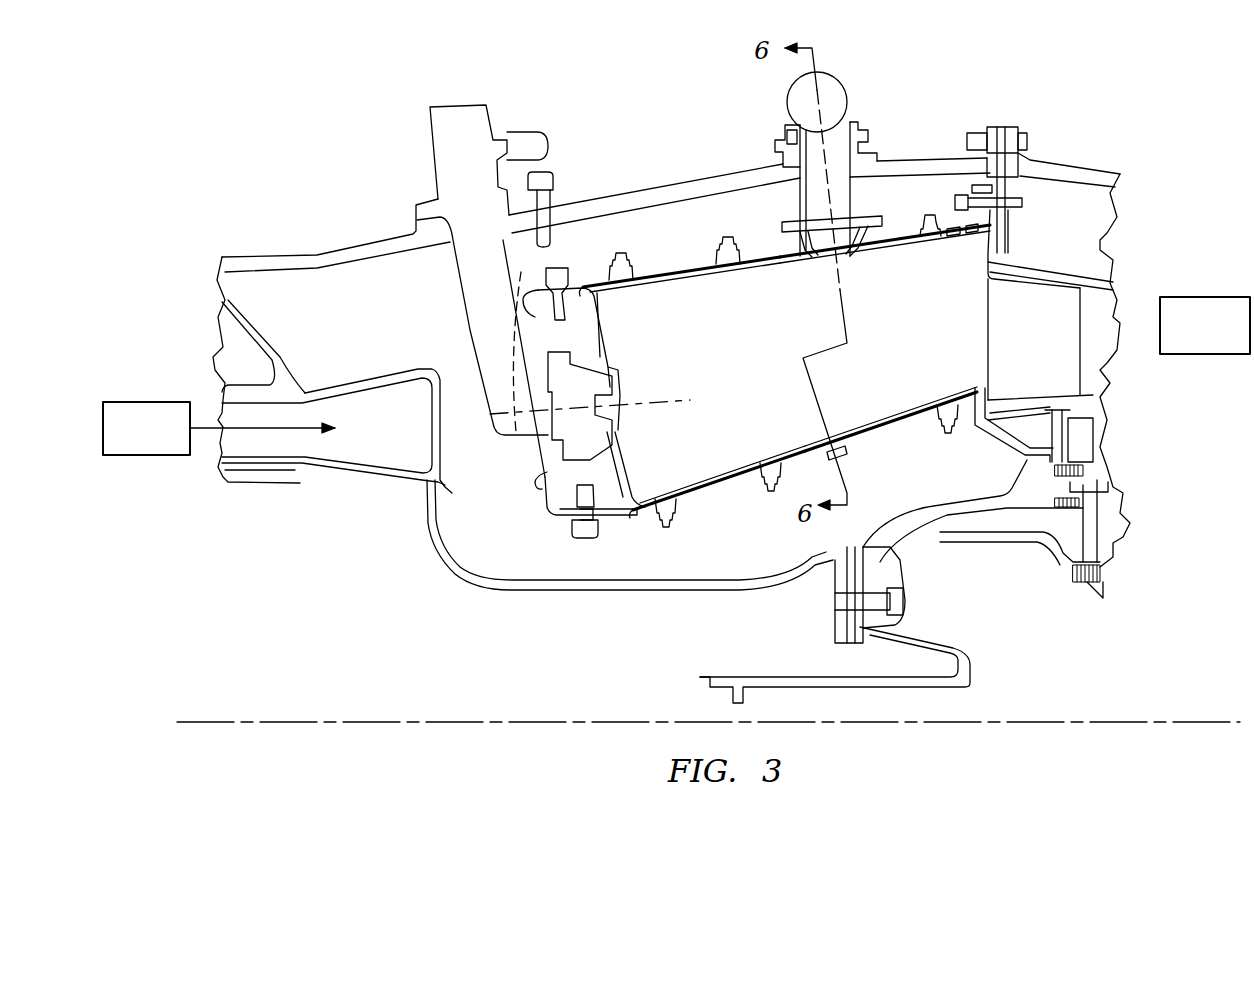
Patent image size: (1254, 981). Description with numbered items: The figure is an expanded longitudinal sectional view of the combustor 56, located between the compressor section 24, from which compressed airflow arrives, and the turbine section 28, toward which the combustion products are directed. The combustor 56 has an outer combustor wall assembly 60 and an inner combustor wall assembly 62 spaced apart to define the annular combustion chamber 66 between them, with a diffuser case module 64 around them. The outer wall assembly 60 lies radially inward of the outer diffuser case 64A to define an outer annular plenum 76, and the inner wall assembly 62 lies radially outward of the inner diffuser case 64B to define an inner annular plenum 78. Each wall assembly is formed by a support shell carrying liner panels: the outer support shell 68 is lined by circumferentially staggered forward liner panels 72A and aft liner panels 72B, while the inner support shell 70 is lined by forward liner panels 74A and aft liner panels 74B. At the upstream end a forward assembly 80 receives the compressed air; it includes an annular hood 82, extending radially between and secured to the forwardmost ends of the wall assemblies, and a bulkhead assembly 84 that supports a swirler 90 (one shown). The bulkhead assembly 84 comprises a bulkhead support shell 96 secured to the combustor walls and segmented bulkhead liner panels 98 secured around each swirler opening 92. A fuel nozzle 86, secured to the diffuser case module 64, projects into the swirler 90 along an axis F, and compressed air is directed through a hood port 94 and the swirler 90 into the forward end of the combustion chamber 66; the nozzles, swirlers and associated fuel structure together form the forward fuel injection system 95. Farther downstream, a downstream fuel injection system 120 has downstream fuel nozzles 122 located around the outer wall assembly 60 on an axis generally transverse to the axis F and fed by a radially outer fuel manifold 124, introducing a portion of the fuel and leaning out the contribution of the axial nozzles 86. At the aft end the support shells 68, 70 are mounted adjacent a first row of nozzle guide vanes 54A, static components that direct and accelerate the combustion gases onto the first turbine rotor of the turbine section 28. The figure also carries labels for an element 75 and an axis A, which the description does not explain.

The compressor section 24 is at (134, 441).
The turbine section 28 is at (1192, 338).
The nozzle guide vanes 54A is at (1052, 351).
The combustor 56 is at (1035, 107).
The outer combustor wall assembly 60 is at (889, 190).
The inner combustor wall assembly 62 is at (793, 478).
The diffuser case module 64 is at (923, 148).
The outer diffuser case 64A is at (688, 187).
The inner diffuser case 64B is at (697, 593).
The annular combustion chamber 66 is at (787, 318).
The outer support shell 68 is at (777, 256).
The inner support shell 70 is at (835, 440).
The forward liner panels 72A is at (710, 275).
The aft liner panels 72B is at (877, 245).
The forward liner panels 74A is at (736, 478).
The aft liner panels 74B is at (880, 417).
The stud 75 is at (950, 432).
The outer annular plenum 76 is at (642, 241).
The inner annular plenum 78 is at (727, 561).
The forward assembly 80 is at (540, 523).
The annular hood 82 is at (543, 487).
The bulkhead assembly 84 is at (612, 335).
The fuel nozzle 86 is at (490, 227).
The swirler 90 is at (620, 428).
The swirler opening 92 is at (613, 371).
The hood port 94 is at (538, 480).
The forward fuel injection system 95 is at (397, 186).
The bulkhead support shell 96 is at (543, 508).
The bulkhead liner panels 98 is at (617, 457).
The downstream fuel injection system 120 is at (976, 72).
The downstream fuel nozzles 122 is at (800, 198).
The radially outer fuel manifold 124 is at (790, 103).
The engine central axis A is at (1220, 718).
The axis F is at (599, 404).